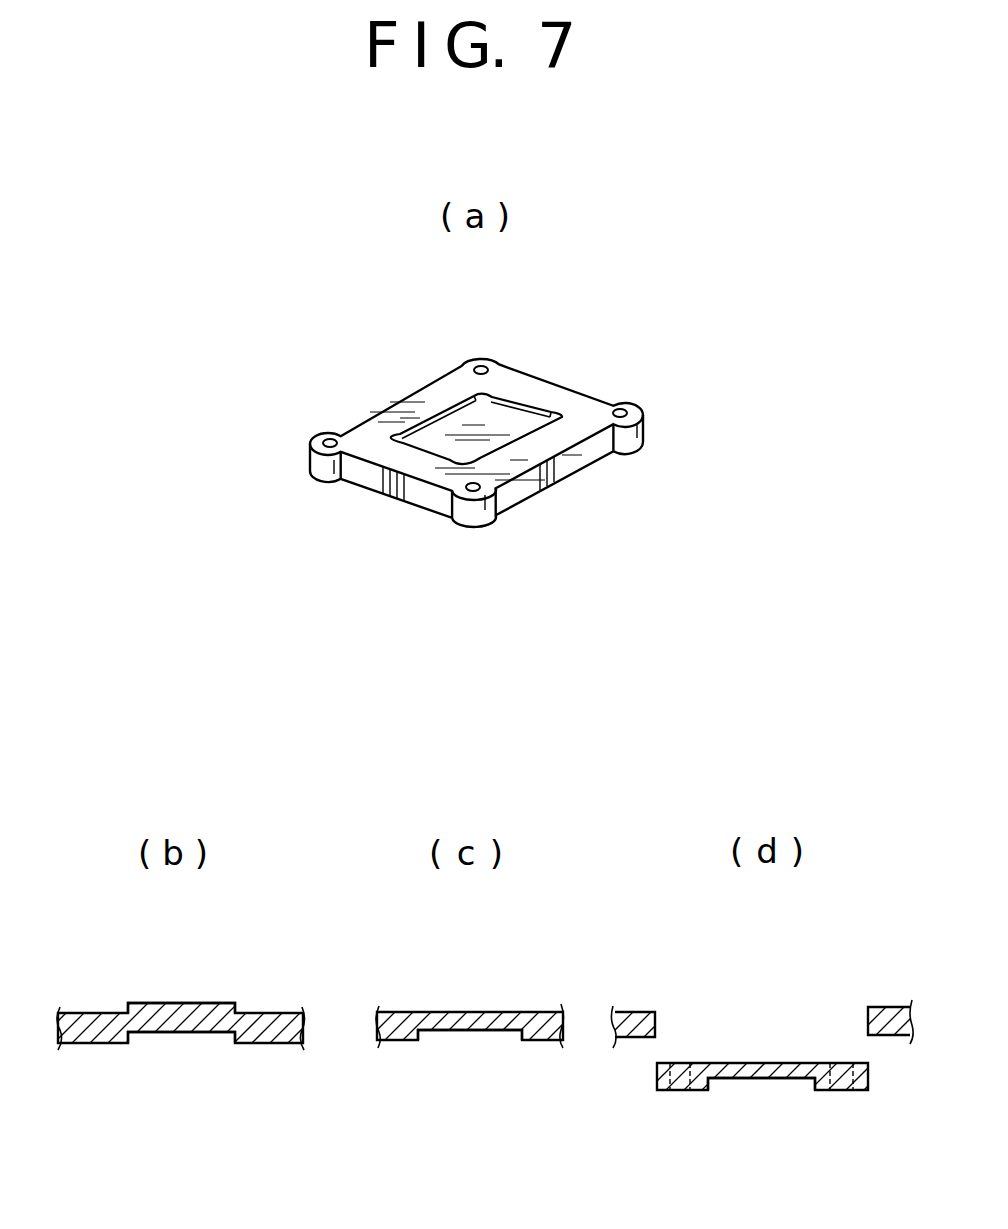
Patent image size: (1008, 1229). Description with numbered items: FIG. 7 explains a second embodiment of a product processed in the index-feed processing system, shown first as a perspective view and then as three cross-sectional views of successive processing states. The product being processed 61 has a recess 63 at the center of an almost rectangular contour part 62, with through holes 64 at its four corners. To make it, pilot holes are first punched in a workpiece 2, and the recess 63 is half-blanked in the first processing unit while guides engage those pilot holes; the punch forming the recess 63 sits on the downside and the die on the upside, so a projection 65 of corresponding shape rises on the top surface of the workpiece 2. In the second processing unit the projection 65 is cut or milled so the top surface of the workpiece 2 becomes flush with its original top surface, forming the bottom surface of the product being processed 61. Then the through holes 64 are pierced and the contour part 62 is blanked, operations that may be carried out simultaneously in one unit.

The workpiece 2 is at (97, 1013).
The product being processed 61 is at (578, 372).
The contour part 62 is at (543, 450).
The recess 63 is at (453, 432).
The through holes 64 is at (330, 441).
The projection 65 is at (203, 1003).